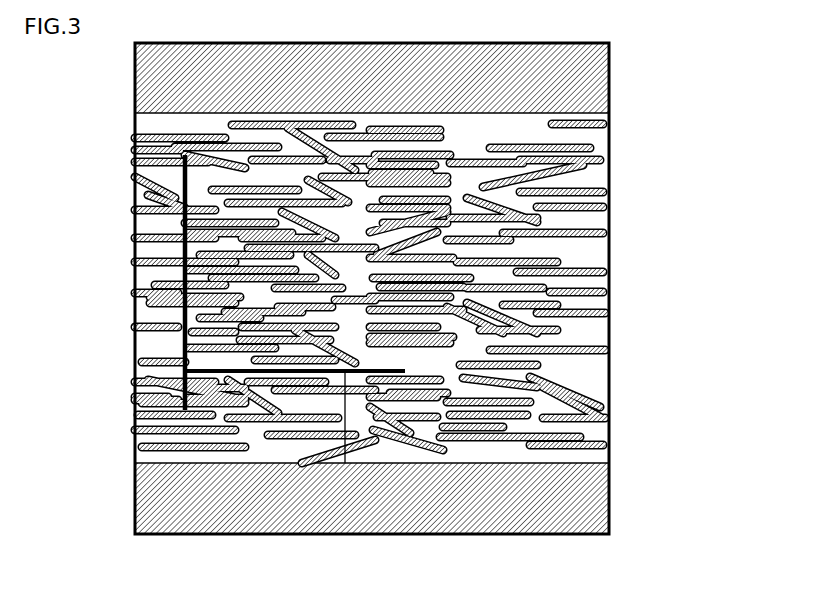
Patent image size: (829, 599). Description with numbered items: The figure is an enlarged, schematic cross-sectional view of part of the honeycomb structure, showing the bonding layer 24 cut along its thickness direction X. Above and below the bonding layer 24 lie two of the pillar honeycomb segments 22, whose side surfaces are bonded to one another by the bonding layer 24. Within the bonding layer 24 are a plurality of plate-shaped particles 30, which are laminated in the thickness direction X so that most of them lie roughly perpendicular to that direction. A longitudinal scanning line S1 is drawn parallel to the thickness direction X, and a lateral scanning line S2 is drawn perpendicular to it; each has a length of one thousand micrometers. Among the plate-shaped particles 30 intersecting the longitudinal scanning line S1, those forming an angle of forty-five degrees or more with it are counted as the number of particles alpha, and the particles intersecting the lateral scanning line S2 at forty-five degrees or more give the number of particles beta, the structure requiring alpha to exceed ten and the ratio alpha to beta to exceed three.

The honeycomb segment 22 is at (596, 79).
The bonding layer 24 is at (594, 173).
The plate-shaped particle 30 is at (565, 347).
The longitudinal scanning line S1 is at (184, 251).
The lateral scanning line S2 is at (345, 463).
The thickness direction X is at (765, 210).